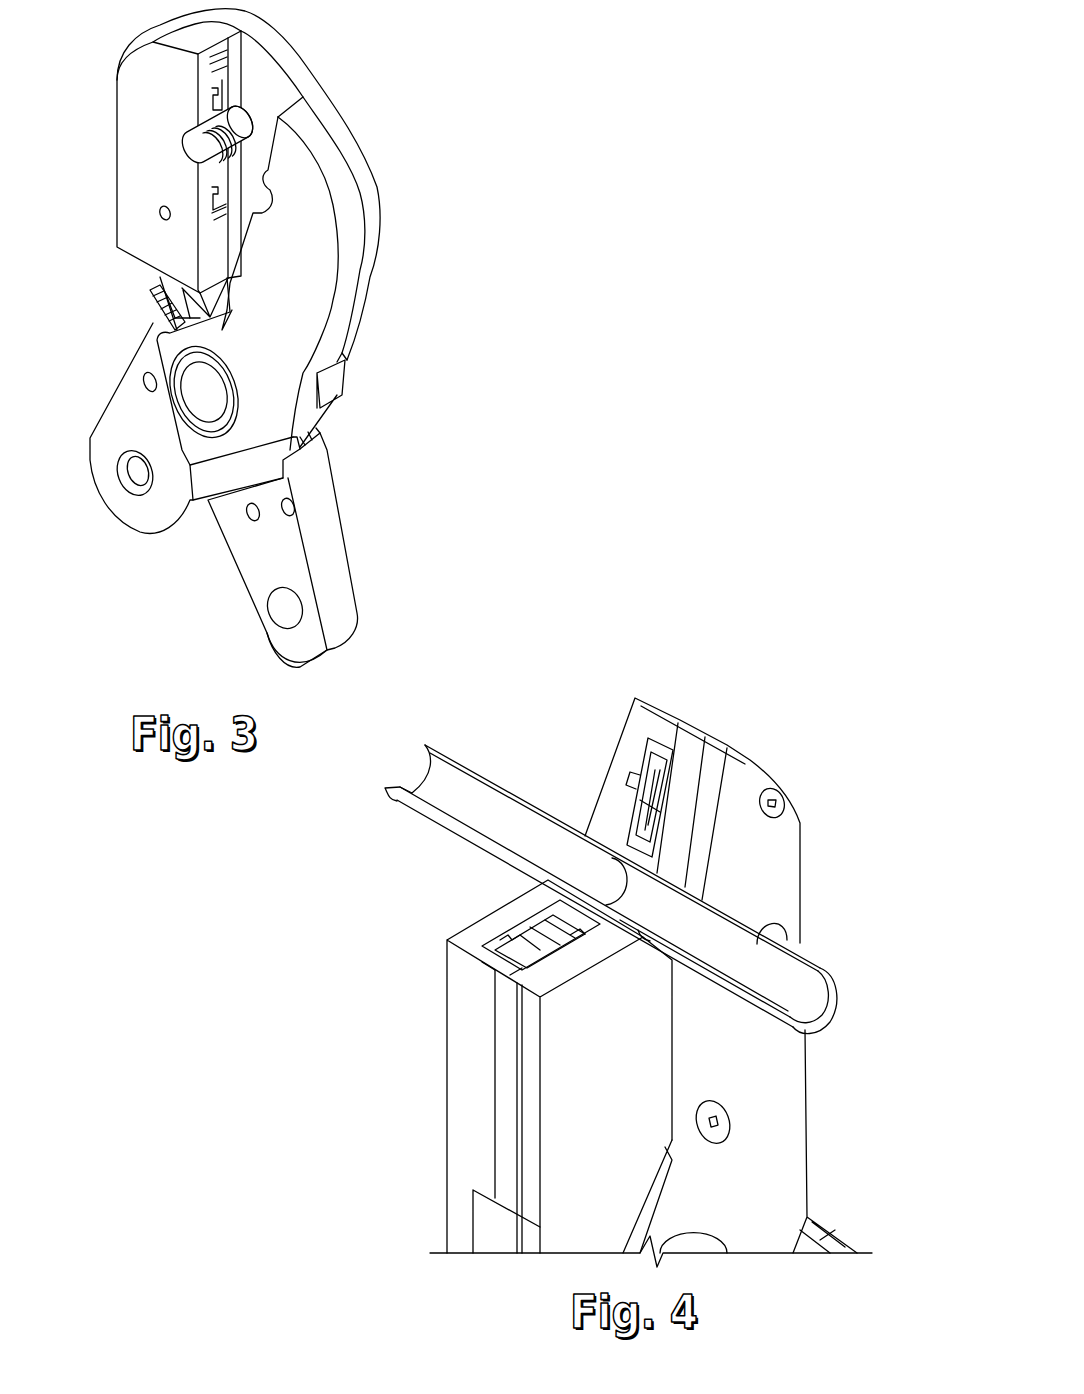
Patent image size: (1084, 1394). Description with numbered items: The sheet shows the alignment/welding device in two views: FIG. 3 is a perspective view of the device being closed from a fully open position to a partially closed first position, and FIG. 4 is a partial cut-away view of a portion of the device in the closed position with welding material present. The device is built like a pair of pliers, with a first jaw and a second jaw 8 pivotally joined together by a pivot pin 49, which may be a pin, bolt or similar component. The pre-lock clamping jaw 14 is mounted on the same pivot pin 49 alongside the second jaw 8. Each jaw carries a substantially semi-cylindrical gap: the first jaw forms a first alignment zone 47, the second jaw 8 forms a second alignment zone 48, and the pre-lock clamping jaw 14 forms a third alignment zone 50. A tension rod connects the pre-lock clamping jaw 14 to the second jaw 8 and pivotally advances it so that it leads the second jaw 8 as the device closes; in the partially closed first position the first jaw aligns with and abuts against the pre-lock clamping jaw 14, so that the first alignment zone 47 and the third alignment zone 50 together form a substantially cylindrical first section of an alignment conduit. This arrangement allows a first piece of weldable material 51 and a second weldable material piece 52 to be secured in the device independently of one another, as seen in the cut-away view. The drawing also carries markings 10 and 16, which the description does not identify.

In FIG. 3, the third alignment zone 50 is at (108, 47).
In FIG. 3, the pre-lock clamping jaw 14 is at (297, 68).
In FIG. 3, the guide slot 16 is at (220, 88).
In FIG. 3, the housing 10 is at (333, 110).
In FIG. 3, the second jaw 8 is at (345, 178).
In FIG. 3, the first alignment zone 47 is at (190, 143).
In FIG. 3, the second alignment zone 48 is at (301, 256).
In FIG. 3, the pivot pin 49 is at (208, 383).
In FIG. 4, the first piece of weldable material 51 is at (758, 710).
In FIG. 4, the second weldable material piece 52 is at (400, 1038).